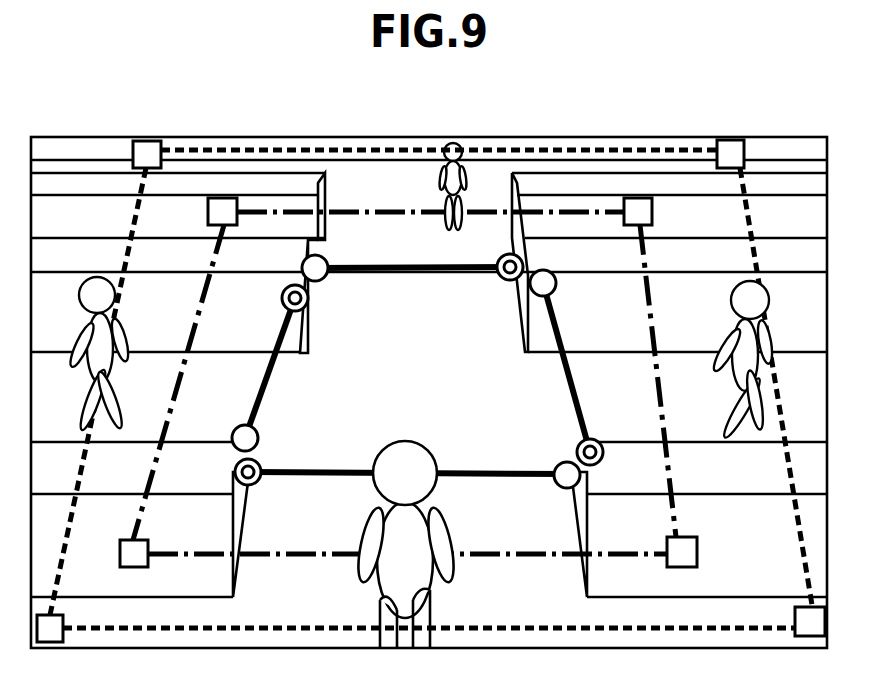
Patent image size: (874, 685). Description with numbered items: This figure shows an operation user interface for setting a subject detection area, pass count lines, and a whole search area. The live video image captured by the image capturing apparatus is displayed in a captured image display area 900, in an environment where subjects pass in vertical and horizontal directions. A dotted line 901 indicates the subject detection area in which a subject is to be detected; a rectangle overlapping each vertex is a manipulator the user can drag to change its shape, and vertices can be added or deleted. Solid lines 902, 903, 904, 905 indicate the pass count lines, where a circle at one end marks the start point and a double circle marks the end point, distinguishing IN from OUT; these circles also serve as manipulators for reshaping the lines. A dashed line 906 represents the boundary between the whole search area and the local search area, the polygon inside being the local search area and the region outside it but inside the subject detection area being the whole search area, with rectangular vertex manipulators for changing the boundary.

The captured image display area 900 is at (88, 147).
The dotted line 901 is at (636, 147).
The solid line 902 is at (412, 272).
The solid line 903 is at (566, 381).
The solid line 904 is at (490, 468).
The solid line 905 is at (272, 375).
The dashed line 906 is at (678, 517).